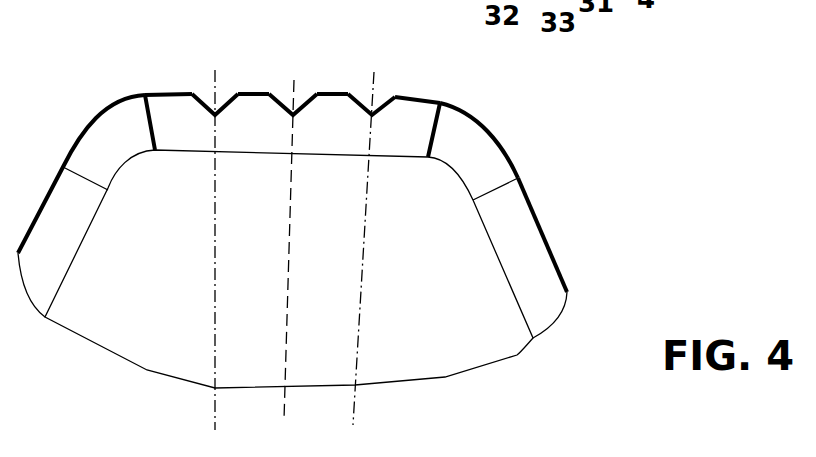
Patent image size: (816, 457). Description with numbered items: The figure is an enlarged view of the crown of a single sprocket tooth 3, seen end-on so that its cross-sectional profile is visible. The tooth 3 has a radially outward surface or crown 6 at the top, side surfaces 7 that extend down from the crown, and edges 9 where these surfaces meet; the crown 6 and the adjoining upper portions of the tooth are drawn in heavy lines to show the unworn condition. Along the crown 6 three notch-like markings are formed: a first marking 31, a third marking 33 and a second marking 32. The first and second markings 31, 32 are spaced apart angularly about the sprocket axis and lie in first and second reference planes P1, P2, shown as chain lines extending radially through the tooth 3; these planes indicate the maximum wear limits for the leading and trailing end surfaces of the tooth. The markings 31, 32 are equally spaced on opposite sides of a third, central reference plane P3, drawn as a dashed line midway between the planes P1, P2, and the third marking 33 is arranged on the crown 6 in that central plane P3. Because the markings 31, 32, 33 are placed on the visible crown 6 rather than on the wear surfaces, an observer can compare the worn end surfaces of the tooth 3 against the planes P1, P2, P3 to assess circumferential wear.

The tooth 3 is at (527, 213).
The crown 6 is at (279, 40).
The side surfaces 7 is at (423, 311).
The edges 9 is at (551, 260).
The first marking 31 is at (204, 78).
The second marking 32 is at (389, 81).
The third marking 33 is at (307, 79).
The first reference plane P1 is at (219, 219).
The second reference plane P2 is at (371, 202).
The third reference plane P3 is at (291, 245).